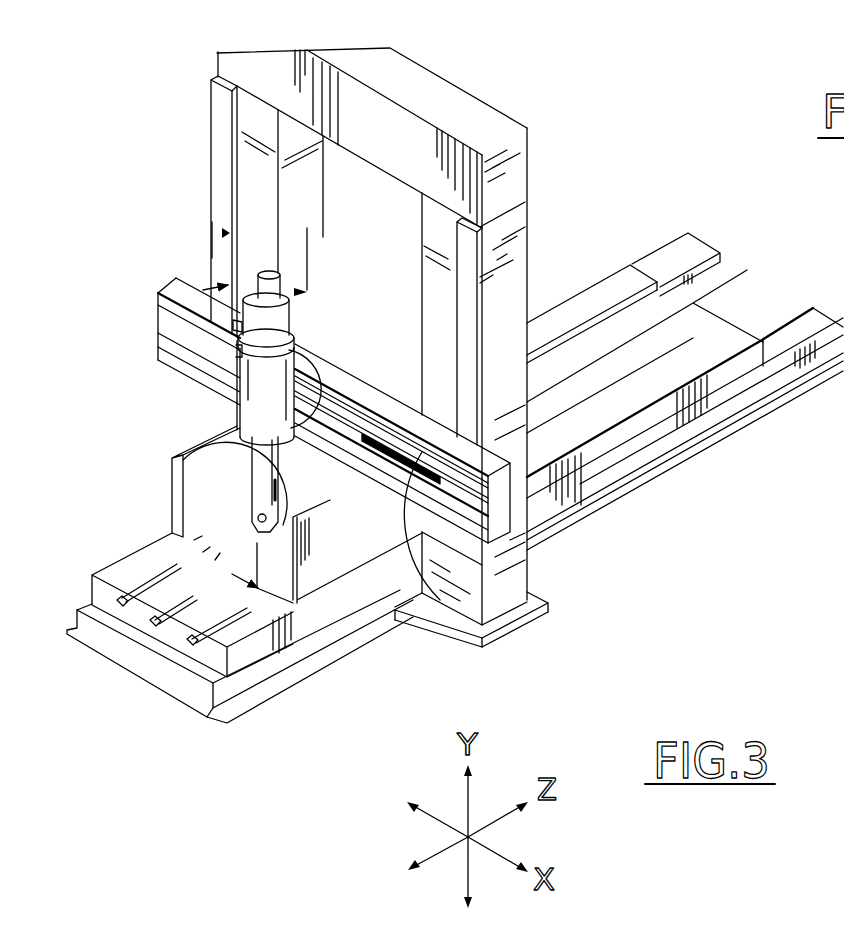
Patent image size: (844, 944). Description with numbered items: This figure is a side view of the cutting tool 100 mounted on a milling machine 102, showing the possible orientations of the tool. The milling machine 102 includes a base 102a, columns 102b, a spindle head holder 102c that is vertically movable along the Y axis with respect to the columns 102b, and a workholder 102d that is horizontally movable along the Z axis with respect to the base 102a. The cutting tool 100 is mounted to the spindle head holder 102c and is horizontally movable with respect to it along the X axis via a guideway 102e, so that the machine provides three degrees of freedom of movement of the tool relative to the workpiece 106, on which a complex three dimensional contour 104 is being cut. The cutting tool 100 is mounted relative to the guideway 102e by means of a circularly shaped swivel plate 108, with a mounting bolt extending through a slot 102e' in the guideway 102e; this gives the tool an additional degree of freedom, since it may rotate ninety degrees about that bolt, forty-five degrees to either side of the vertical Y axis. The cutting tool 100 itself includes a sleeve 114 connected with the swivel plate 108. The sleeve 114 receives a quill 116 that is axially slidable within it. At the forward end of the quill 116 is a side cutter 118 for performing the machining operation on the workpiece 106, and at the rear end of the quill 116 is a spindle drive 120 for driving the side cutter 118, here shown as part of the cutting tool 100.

The cutting tool 100 is at (455, 415).
The milling machine 102 is at (455, 415).
The base 102a is at (603, 447).
The columns 102b is at (212, 130).
The spindle head holder 102c is at (505, 528).
The workholder 102d is at (245, 660).
The guideway 102e is at (507, 570).
The slot 102e' is at (471, 637).
The three dimensional contour 104 is at (203, 480).
The workpiece 106 is at (335, 560).
The swivel plate 108 is at (315, 358).
The sleeve 114 is at (237, 383).
The quill 116 is at (253, 498).
The side cutter 118 is at (258, 590).
The spindle drive 120 is at (292, 294).